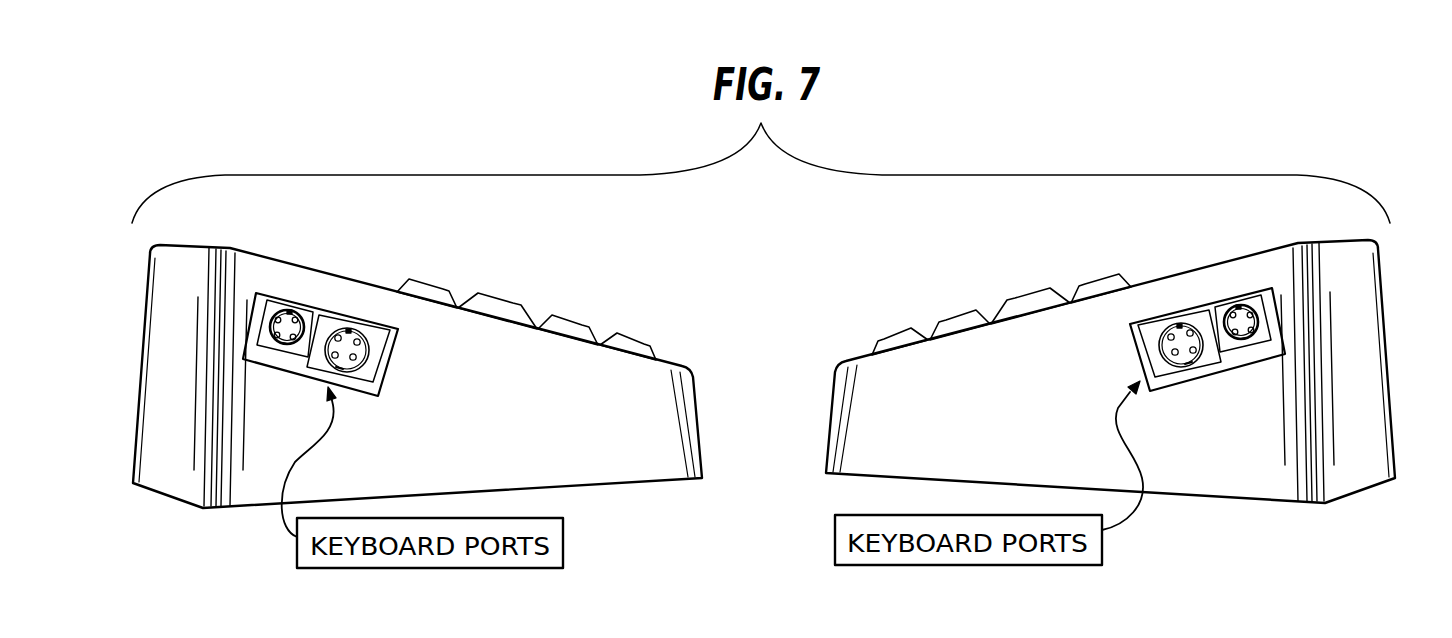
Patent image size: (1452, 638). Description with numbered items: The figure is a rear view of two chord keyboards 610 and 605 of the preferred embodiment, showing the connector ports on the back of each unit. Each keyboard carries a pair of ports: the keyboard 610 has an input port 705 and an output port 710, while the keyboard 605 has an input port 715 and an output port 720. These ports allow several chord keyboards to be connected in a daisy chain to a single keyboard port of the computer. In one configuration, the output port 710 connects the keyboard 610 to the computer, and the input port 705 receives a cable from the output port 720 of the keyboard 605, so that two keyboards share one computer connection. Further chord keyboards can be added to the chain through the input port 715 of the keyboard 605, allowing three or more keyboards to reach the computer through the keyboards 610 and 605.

The chord keyboard 610 is at (138, 372).
The chord keyboard 605 is at (1392, 357).
The output port 710 is at (288, 308).
The input port 705 is at (367, 327).
The input port 715 is at (1182, 318).
The output port 720 is at (1245, 300).